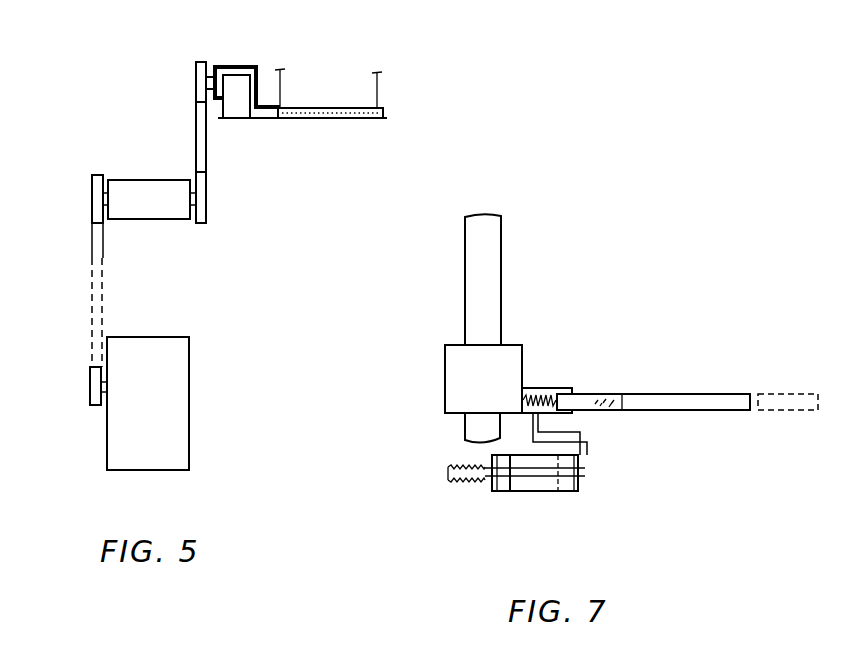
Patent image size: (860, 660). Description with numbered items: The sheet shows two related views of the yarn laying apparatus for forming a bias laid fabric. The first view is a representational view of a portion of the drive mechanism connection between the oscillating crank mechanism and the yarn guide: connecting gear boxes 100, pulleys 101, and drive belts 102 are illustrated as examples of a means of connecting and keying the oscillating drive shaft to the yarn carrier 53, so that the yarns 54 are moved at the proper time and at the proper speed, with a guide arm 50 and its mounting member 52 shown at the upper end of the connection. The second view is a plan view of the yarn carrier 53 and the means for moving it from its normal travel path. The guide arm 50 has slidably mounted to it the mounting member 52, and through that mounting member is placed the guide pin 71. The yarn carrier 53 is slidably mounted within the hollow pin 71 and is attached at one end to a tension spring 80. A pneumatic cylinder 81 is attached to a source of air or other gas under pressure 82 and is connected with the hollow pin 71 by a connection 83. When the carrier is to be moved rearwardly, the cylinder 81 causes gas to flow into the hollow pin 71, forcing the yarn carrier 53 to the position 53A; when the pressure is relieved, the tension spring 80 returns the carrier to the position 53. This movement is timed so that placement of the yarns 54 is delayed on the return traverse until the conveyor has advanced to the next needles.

In FIG. 5, the guide arm 50 is at (235, 115).
In FIG. 7, the guide arm 50 is at (490, 278).
In FIG. 5, the mounting member 52 is at (232, 72).
In FIG. 7, the mounting member 52 is at (453, 385).
In FIG. 5, the yarn carrier 53 is at (345, 120).
In FIG. 7, the yarn carrier 53 is at (647, 392).
In FIG. 7, the rearward position of yarn carrier 53A is at (775, 393).
In FIG. 5, the yarns 54 is at (283, 92).
In FIG. 7, the guide pin 71 is at (562, 388).
In FIG. 7, the tension spring 80 is at (533, 402).
In FIG. 7, the pneumatic cylinder 81 is at (538, 483).
In FIG. 7, the source of air or other gas under pressure 82 is at (462, 478).
In FIG. 7, the connection 83 is at (540, 432).
In FIG. 5, the connecting gear boxes 100 is at (152, 207).
In FIG. 5, the pulleys 101 is at (92, 195).
In FIG. 5, the drive belts 102 is at (207, 160).